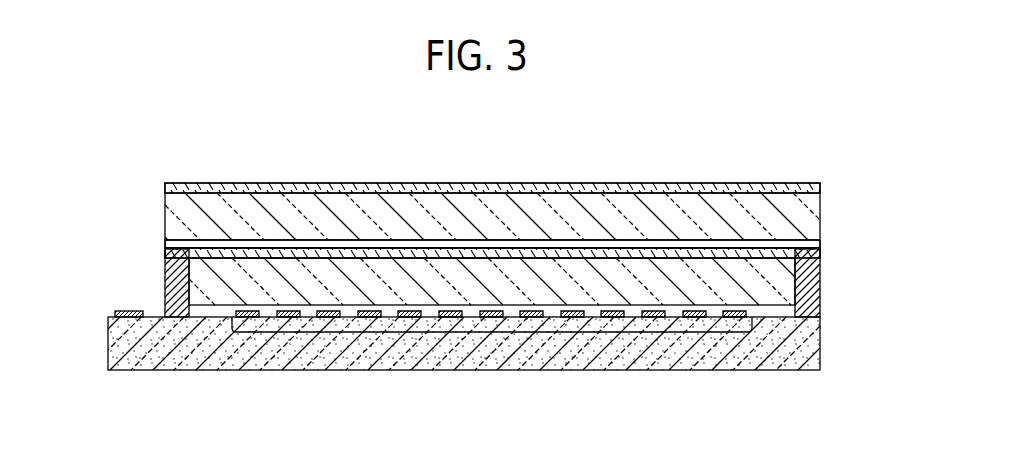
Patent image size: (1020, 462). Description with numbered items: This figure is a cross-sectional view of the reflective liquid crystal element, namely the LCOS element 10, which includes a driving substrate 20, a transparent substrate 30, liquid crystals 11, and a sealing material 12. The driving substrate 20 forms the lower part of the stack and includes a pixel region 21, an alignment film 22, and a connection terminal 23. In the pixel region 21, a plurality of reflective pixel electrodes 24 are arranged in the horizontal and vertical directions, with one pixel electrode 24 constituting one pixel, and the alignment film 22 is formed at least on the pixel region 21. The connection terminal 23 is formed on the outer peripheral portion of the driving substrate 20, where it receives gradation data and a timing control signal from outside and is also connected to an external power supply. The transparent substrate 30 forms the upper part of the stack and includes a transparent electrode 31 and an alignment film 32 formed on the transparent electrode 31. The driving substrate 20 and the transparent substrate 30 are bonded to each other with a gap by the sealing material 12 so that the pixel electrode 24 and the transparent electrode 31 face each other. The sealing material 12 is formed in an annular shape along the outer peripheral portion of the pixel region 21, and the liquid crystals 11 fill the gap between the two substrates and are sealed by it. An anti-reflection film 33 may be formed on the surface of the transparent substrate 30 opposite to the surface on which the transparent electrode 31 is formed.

The LCOS element 10 is at (626, 161).
The liquid crystals 11 is at (790, 278).
The sealing material 12 is at (165, 272).
The driving substrate 20 is at (822, 345).
The pixel region 21 is at (493, 332).
The alignment film 22 is at (776, 324).
The connection terminal 23 is at (125, 311).
The reflective pixel electrodes 24 is at (244, 311).
The transparent substrate 30 is at (820, 210).
The transparent electrode 31 is at (165, 243).
The alignment film 32 is at (402, 255).
The anti-reflection film 33 is at (165, 188).